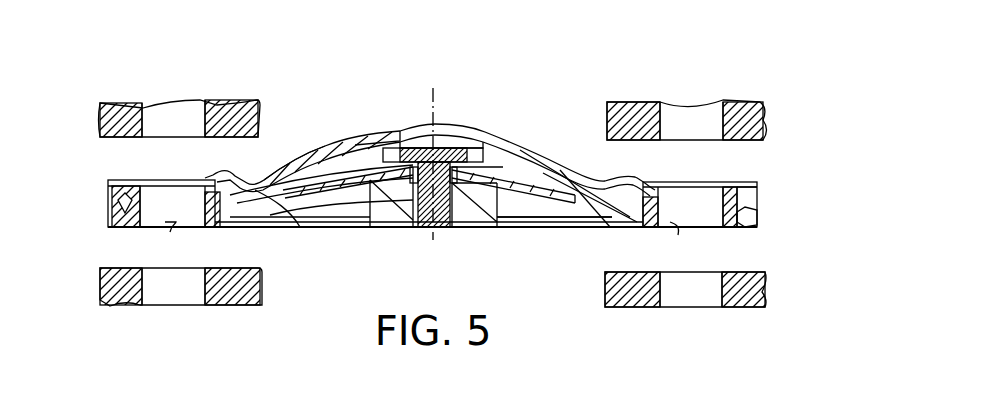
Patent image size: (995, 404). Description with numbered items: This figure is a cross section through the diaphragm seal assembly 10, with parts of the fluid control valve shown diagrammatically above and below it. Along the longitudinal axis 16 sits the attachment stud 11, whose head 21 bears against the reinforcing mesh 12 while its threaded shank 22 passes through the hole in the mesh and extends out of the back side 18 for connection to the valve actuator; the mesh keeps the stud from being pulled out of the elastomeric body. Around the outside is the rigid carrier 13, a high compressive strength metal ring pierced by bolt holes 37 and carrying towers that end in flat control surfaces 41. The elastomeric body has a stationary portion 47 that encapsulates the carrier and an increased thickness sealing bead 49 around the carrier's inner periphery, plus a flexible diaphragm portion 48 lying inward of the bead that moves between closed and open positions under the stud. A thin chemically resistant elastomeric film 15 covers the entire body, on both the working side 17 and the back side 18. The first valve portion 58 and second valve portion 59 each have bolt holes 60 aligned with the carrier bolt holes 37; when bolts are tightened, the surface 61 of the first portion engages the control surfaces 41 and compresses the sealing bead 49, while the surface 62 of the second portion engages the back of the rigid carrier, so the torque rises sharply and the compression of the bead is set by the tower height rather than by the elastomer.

The diaphragm seal assembly 10 is at (547, 157).
The attachment stud 11 is at (443, 227).
The reinforcing mesh 12 is at (335, 192).
The rigid carrier 13 is at (428, 242).
The elastomeric film 15 is at (303, 160).
The longitudinal axis 16 is at (433, 88).
The working side 17 is at (583, 170).
The back side 18 is at (545, 230).
The head 21 is at (488, 140).
The threaded shank 22 is at (390, 210).
The bolt holes 37 is at (150, 205).
The control surfaces 41 is at (745, 180).
The stationary portion 47 is at (630, 220).
The diaphragm portion 48 is at (383, 150).
The sealing bead 49 is at (263, 213).
The first fluid control valve portion 58 is at (135, 115).
The second fluid control valve portion 59 is at (215, 306).
The bolt holes 60 is at (170, 123).
The surface 61 is at (120, 138).
The surface 62 is at (228, 268).